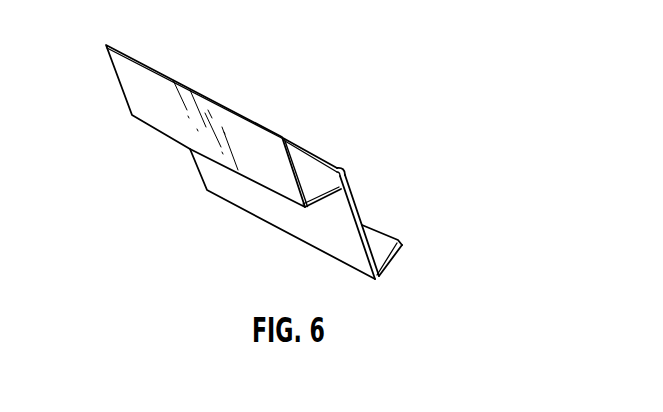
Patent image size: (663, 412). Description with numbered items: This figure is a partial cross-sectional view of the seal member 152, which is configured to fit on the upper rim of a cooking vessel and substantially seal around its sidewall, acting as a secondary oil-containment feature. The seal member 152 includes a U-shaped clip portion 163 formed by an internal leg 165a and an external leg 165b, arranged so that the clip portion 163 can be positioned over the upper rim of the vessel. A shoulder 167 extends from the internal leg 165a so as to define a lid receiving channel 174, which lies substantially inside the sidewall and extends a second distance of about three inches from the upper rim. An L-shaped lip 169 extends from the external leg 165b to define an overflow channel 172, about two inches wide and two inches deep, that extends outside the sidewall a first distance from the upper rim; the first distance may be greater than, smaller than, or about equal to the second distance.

The seal member 152 is at (318, 173).
The U-shaped clip portion 163 is at (289, 140).
The internal leg 165a is at (358, 205).
The external leg 165b is at (337, 184).
The shoulder 167 is at (392, 260).
The L-shaped lip 169 is at (143, 92).
The overflow channel 172 is at (303, 177).
The lid receiving channel 174 is at (383, 240).